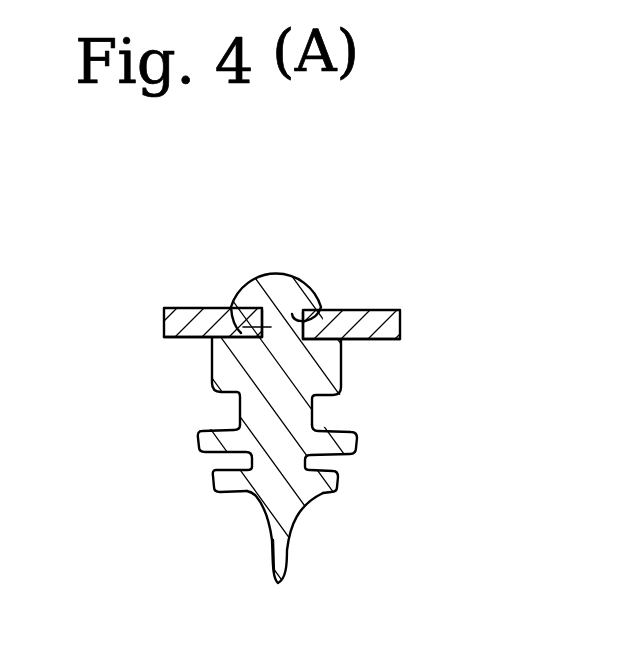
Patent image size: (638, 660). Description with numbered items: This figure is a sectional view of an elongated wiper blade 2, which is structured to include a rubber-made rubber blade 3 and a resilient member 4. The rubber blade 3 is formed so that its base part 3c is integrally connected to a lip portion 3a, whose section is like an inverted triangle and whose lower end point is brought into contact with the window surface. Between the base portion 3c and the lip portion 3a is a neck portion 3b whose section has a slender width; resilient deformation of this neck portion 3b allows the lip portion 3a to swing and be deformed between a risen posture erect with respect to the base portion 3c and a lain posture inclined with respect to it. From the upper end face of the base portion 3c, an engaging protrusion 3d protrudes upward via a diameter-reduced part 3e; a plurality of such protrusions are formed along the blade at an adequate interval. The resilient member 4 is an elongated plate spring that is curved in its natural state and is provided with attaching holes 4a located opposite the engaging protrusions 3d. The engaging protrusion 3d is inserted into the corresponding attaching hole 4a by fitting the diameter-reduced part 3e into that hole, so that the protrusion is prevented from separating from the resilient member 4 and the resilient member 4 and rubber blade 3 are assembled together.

The wiper blade 2 is at (498, 276).
The rubber blade 3 is at (295, 230).
The lip portion 3a is at (277, 528).
The neck portion 3b is at (283, 453).
The base part 3c is at (320, 370).
The engaging protrusion 3d is at (280, 290).
The diameter-reduced part 3e is at (243, 327).
The resilient member 4 is at (390, 325).
The attaching hole 4a is at (312, 293).